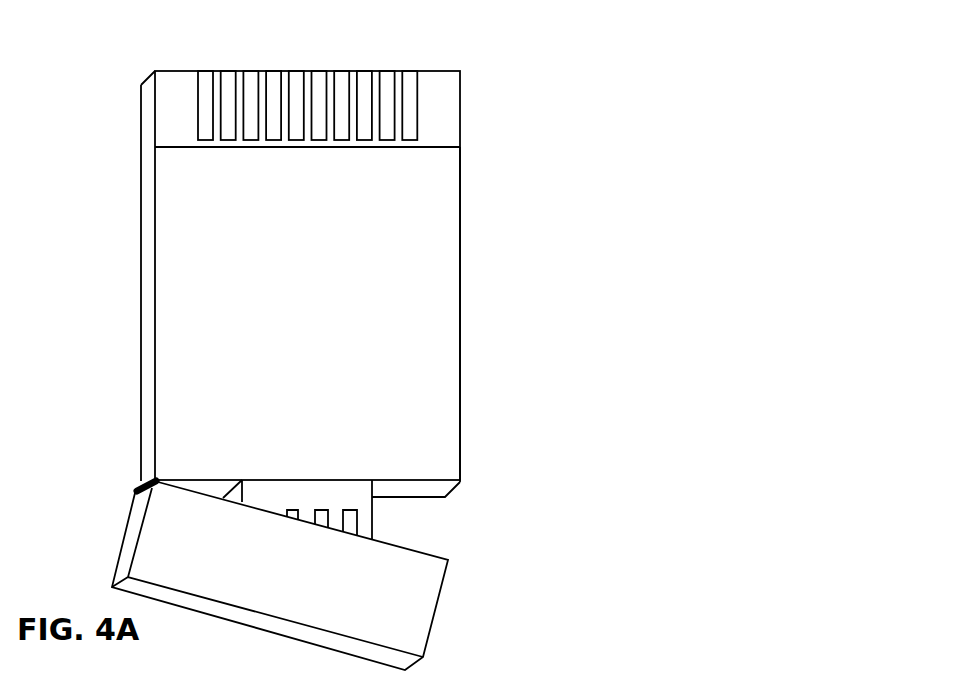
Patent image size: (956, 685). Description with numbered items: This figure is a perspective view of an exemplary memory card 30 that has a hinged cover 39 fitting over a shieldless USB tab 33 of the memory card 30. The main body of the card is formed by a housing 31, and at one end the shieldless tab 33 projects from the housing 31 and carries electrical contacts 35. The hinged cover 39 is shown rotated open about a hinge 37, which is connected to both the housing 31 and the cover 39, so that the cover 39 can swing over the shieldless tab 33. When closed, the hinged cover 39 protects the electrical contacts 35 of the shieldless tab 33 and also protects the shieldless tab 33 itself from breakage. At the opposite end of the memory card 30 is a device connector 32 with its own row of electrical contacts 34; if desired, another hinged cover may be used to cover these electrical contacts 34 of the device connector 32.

The memory card 30 is at (560, 82).
The housing 31 is at (150, 238).
The device connector 32 is at (450, 127).
The shieldless USB tab 33 is at (362, 490).
The electrical contacts 34 is at (417, 68).
The electrical contacts 35 is at (357, 505).
The hinge 37 is at (138, 487).
The hinged cover 39 is at (440, 447).